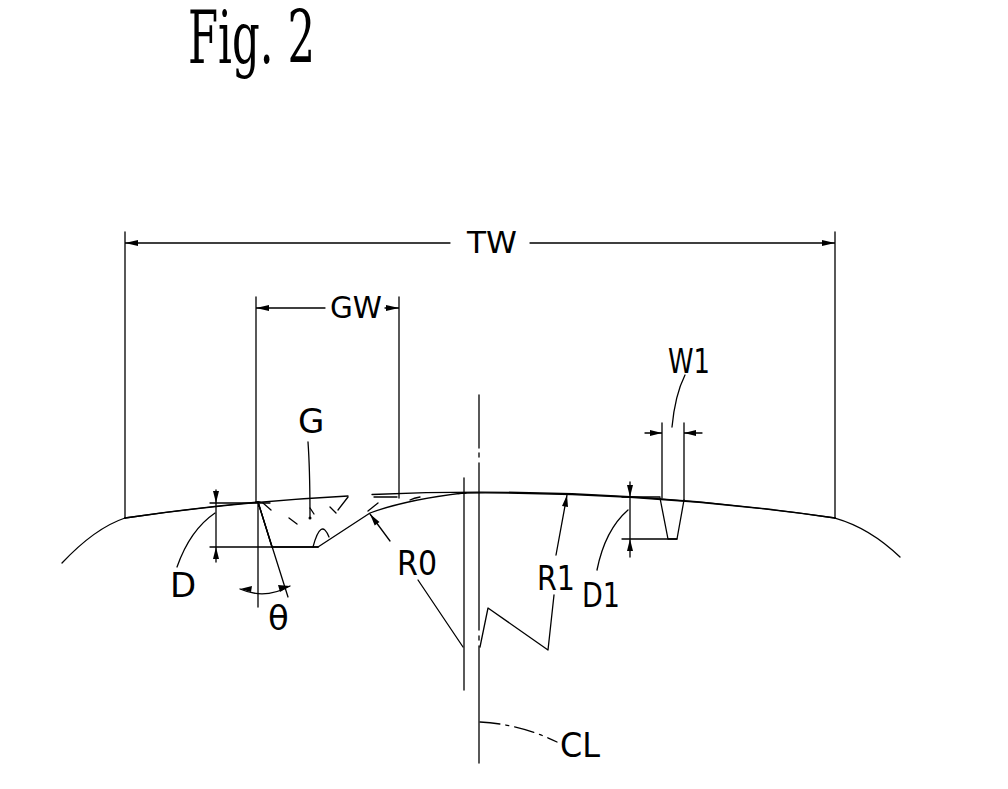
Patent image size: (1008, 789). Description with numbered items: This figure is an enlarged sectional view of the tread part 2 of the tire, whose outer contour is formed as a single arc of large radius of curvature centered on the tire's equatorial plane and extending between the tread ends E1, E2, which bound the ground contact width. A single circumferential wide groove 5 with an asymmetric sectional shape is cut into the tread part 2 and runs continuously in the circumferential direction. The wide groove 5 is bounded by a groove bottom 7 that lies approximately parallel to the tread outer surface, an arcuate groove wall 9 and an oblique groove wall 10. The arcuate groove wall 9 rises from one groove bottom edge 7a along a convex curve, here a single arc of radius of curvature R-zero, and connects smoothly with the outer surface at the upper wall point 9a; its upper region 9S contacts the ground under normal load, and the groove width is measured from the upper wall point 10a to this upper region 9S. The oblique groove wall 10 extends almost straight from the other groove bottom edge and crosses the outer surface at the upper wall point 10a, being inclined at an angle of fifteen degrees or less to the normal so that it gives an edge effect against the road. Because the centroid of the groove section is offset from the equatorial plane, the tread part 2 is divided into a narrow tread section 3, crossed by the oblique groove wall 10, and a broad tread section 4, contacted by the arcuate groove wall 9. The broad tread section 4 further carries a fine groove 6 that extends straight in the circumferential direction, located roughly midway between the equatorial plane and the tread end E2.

The tread part 2 is at (503, 470).
The narrow tread section 3 is at (183, 510).
The broad tread section 4 is at (738, 500).
The circumferential wide groove 5 is at (330, 488).
The fine groove 6 is at (670, 500).
The groove bottom 7 is at (286, 504).
The groove bottom edge 7a is at (287, 547).
The arcuate groove wall 9 is at (366, 495).
The upper region of the arcuate groove wall 9S is at (417, 493).
The upper wall point 9a is at (462, 493).
The oblique groove wall 10 is at (262, 503).
The upper wall point 10a is at (257, 492).
The tread end E1 is at (123, 520).
The tread end E2 is at (837, 518).